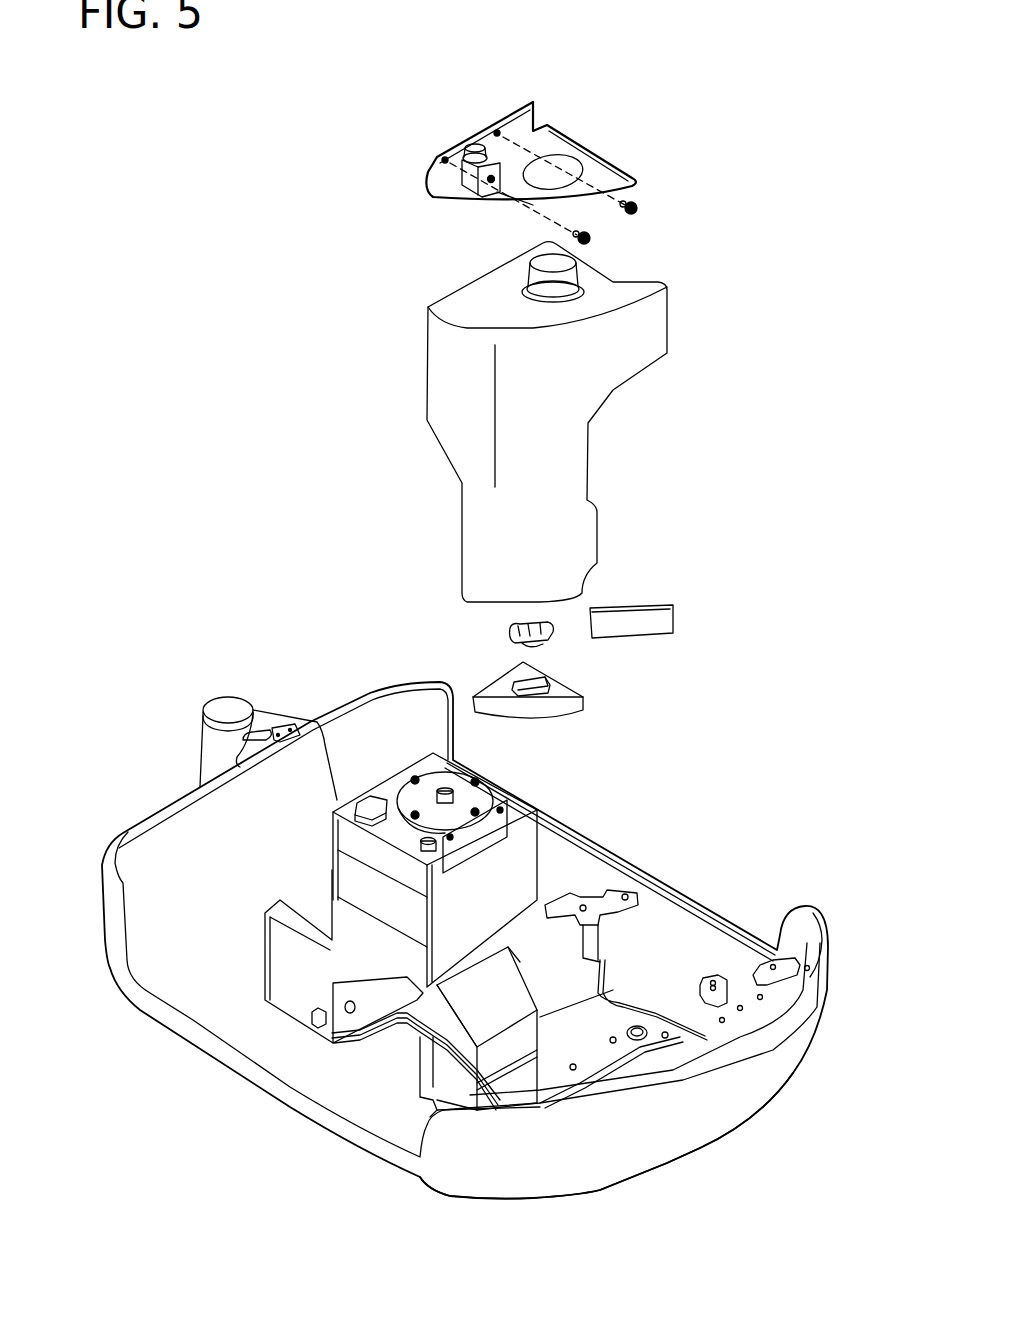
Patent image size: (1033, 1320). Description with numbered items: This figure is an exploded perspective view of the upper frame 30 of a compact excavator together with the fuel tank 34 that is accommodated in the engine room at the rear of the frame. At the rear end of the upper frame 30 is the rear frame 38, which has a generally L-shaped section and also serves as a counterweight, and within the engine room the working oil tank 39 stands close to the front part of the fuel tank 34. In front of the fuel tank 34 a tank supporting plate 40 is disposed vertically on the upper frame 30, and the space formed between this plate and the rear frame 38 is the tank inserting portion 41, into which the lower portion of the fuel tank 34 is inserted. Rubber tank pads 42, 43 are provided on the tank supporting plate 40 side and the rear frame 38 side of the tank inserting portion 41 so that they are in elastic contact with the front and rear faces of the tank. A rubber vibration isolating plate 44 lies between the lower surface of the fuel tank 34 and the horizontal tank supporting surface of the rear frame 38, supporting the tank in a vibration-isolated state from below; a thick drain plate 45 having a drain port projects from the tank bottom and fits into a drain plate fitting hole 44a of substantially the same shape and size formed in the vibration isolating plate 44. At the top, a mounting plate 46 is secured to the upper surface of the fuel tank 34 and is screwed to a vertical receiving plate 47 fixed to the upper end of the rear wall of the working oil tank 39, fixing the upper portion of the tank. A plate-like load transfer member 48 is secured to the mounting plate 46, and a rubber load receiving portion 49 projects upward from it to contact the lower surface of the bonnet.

The upper frame 30 is at (465, 954).
The fuel tank 34 is at (440, 383).
The rear frame 38 is at (663, 1150).
The working oil tank 39 is at (401, 912).
The tank supporting plate 40 is at (520, 987).
The tank inserting portion 41 is at (530, 1087).
The tank pad 42 is at (497, 1060).
The tank pad 43 is at (655, 607).
The vibration isolating plate 44 is at (551, 716).
The drain plate fitting hole 44a is at (540, 684).
The drain plate 45 is at (508, 637).
The mounting plate 46 is at (503, 120).
The vertical receiving plate 47 is at (477, 837).
The load transfer member 48 is at (462, 200).
The load receiving portion 49 is at (470, 138).